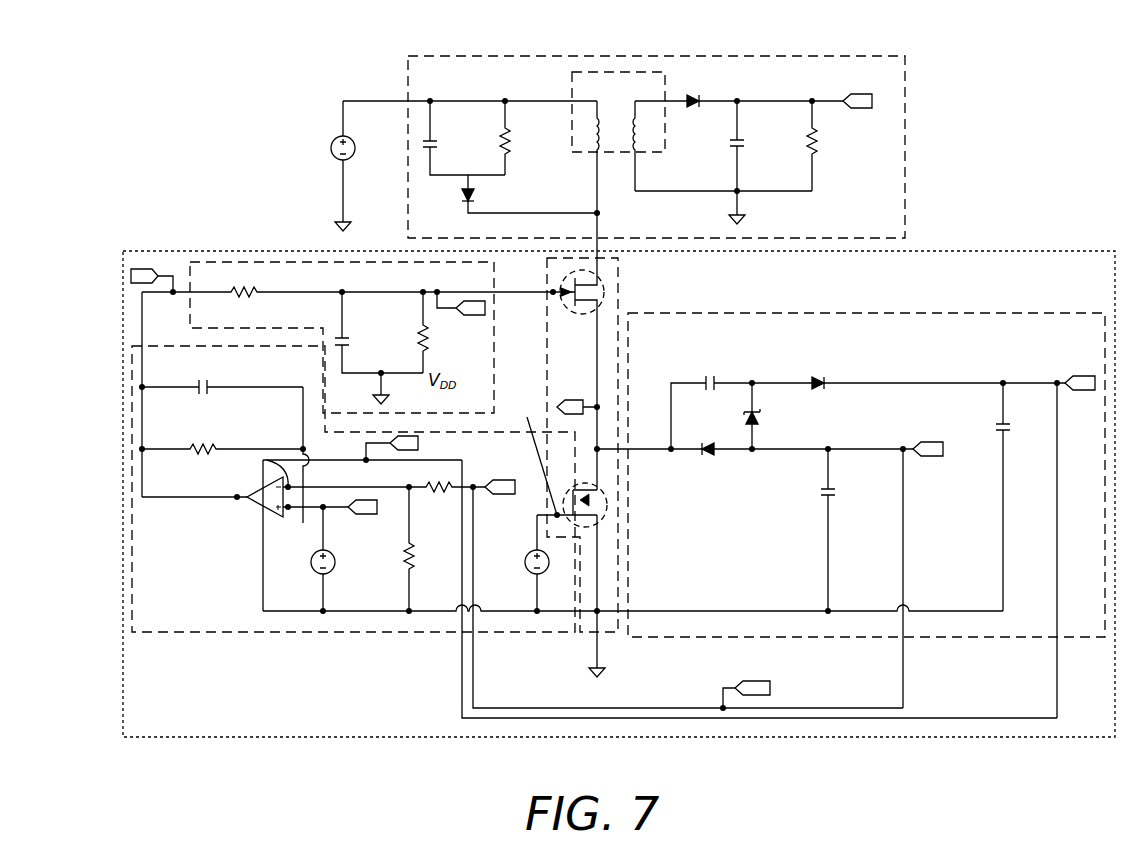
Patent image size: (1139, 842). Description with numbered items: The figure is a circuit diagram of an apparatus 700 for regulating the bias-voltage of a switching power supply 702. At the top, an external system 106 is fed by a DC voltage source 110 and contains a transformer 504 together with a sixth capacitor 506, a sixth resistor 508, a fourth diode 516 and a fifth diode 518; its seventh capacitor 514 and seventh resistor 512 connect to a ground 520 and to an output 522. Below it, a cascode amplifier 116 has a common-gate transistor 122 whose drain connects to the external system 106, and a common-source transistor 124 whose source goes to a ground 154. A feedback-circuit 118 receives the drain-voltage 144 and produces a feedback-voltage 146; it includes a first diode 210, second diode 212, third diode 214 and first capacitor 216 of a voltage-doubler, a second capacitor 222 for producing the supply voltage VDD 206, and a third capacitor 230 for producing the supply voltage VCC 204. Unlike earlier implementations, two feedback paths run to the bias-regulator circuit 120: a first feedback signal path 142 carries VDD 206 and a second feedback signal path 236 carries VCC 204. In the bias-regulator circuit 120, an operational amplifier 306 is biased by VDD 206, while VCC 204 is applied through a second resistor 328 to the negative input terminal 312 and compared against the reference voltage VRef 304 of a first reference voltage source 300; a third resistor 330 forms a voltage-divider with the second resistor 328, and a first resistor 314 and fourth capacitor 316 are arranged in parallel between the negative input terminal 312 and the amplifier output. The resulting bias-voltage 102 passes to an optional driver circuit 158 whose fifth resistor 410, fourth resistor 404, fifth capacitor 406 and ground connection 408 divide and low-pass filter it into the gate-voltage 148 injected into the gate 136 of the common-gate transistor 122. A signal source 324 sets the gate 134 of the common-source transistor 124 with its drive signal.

The apparatus 700 is at (619, 494).
The switching power supply 702 is at (940, 47).
The external system 106 is at (656, 147).
The transformer 504 is at (618, 141).
The DC voltage source 110 is at (356, 160).
The sixth capacitor C6 506 is at (436, 144).
The sixth resistor R6 508 is at (500, 141).
The fourth diode D4 516 is at (464, 197).
The fifth diode D5 518 is at (698, 98).
The output 522 is at (857, 95).
The seventh capacitor C7 514 is at (732, 146).
The seventh resistor R7 512 is at (815, 150).
The ground 520 is at (745, 219).
The optional driver circuit 158 is at (342, 337).
The bias-regulator circuit 120 is at (353, 489).
The cascode amplifier 116 is at (582, 445).
The feedback-circuit 118 is at (866, 475).
The bias-voltage 102 is at (140, 268).
The fifth resistor R5 410 is at (254, 296).
The fifth capacitor C5 406 is at (346, 338).
The ground connection 408 is at (377, 398).
The fourth resistor R4 404 is at (427, 346).
The gate-voltage 148 is at (470, 314).
The second supply voltage VDD 206 is at (404, 438).
The gate of the common-gate transistor 136 is at (553, 292).
The common-gate transistor 122 is at (604, 292).
The drain-voltage 144 is at (570, 411).
The fourth capacitor C4 316 is at (203, 398).
The first resistor R1 314 is at (203, 455).
The negative input terminal 312 is at (343, 530).
The operational amplifier 306 is at (252, 506).
The first reference voltage source 300 is at (313, 571).
The first reference voltage VRef 304 is at (362, 514).
The second resistor R2 328 is at (436, 492).
The third resistor R3 330 is at (412, 560).
The first supply voltage VCC 204 is at (499, 494).
The signal source 324 is at (526, 566).
The gate of the common-source transistor 134 is at (534, 456).
The common-source transistor 124 is at (607, 511).
The ground 154 is at (593, 672).
The first feedback signal path 142 is at (461, 680).
The feedback-voltage 146 is at (762, 686).
The second feedback signal path 236 is at (858, 708).
The first diode D1 210 is at (707, 454).
The first capacitor C1 216 is at (707, 380).
The third diode D3 214 is at (817, 380).
The second diode D2 212 is at (747, 420).
The third capacitor C3 230 is at (822, 498).
The second capacitor C2 222 is at (998, 424).